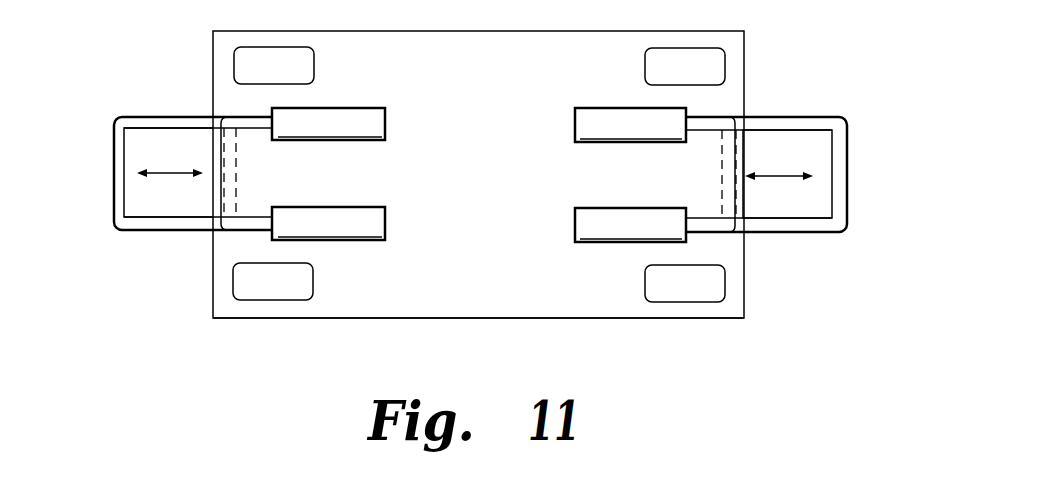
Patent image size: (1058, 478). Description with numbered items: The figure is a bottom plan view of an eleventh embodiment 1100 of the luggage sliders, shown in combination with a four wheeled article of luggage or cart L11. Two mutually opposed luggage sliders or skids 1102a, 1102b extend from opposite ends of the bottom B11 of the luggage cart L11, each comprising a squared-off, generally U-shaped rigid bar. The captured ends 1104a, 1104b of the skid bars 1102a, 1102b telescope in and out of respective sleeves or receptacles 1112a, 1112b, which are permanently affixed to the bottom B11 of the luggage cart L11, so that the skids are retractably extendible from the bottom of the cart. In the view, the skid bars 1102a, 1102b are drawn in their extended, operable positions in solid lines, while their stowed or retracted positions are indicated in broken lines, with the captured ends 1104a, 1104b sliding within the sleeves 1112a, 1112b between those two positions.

The eleventh embodiment of the luggage sliders 1100 is at (240, 346).
The luggage slider or skid 1102a is at (168, 110).
The luggage slider or skid 1102b is at (737, 148).
The captured ends 1104a is at (220, 150).
The captured ends 1104b is at (780, 118).
The sleeve or receptacle 1112a is at (298, 141).
The sleeve or receptacle 1112b is at (630, 175).
The bottom B11 is at (503, 181).
The four wheeled article of luggage or cart L11 is at (490, 320).